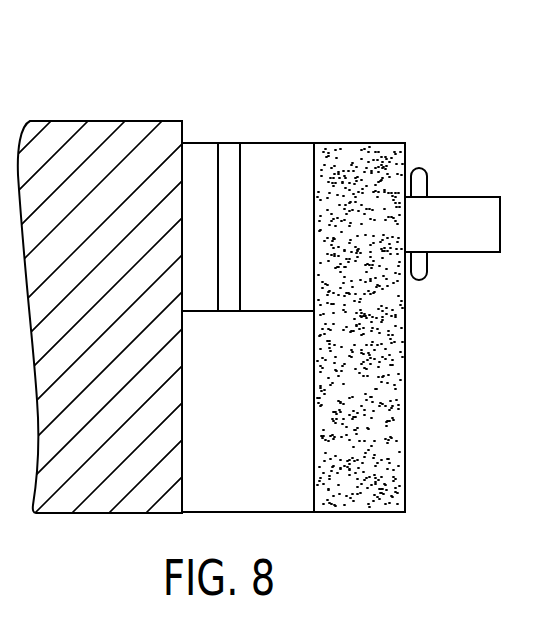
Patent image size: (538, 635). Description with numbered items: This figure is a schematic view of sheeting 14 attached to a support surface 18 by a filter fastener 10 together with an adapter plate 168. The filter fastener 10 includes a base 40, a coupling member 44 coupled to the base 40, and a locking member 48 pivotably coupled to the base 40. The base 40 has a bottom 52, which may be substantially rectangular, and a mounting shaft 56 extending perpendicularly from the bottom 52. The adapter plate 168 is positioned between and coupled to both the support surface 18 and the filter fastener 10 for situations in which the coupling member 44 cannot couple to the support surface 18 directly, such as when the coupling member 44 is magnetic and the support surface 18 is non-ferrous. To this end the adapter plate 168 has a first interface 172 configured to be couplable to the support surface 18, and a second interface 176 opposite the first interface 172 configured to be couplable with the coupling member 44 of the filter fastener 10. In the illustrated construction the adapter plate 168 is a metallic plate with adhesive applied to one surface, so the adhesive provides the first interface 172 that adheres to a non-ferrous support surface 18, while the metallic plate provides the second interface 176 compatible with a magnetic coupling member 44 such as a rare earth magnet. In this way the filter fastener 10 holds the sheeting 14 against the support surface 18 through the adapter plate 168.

The filter fastener 10 is at (292, 154).
The sheeting 14 is at (392, 408).
The support surface 18 is at (85, 122).
The base 40 is at (273, 154).
The coupling member 44 is at (228, 300).
The locking member 48 is at (416, 168).
The bottom 52 is at (304, 303).
The mounting shaft 56 is at (475, 203).
The adapter plate 168 is at (207, 151).
The first interface 172 is at (184, 166).
The second interface 176 is at (213, 296).